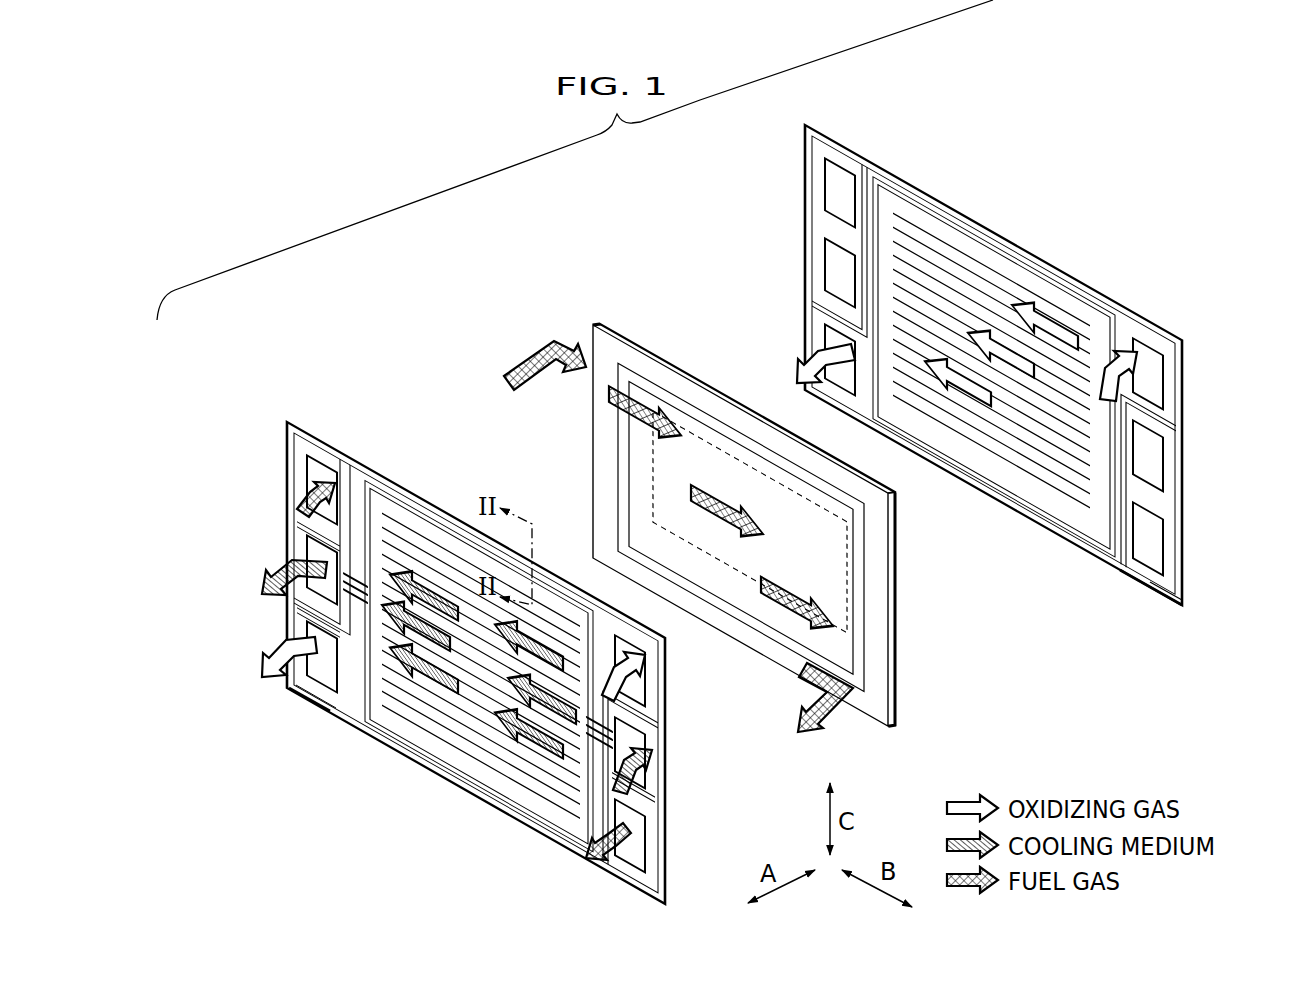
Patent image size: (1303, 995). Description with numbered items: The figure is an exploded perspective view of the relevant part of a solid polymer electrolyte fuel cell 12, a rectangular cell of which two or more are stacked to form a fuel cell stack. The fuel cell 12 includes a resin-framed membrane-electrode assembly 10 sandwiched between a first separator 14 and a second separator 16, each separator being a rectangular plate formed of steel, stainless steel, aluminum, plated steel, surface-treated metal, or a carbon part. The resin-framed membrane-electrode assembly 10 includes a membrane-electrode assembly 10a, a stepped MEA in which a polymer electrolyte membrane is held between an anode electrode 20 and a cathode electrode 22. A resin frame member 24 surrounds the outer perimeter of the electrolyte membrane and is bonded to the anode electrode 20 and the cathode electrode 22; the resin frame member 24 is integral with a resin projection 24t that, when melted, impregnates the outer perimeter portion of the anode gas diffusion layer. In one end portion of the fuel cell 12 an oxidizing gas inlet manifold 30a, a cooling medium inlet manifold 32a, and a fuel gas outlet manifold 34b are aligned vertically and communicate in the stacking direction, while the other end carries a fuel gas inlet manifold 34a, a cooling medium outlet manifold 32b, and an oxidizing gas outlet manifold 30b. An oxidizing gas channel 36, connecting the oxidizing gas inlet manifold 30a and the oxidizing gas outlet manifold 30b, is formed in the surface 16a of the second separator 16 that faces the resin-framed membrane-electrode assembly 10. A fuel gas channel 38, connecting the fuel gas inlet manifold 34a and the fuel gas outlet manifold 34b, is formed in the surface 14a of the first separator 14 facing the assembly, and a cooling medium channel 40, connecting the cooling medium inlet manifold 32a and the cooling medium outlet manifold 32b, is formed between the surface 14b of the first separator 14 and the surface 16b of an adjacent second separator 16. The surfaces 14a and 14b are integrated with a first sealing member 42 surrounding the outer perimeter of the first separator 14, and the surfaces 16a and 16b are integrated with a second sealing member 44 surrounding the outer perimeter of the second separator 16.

The resin-framed membrane-electrode assembly 10 is at (590, 319).
The membrane-electrode assembly 10a is at (717, 578).
The solid polymer electrolyte fuel cell 12 is at (569, 218).
The first separator 14 is at (302, 418).
The surface of the first separator 14a is at (300, 697).
The surface of the first separator 14b is at (325, 692).
The second separator 16 is at (800, 134).
The surface of the second separator 16a is at (1145, 572).
The surface of the second separator 16b is at (1160, 582).
The anode electrode 20 is at (640, 497).
The cathode electrode 22 is at (718, 460).
The resin frame member 24 is at (649, 339).
The resin projection 24t is at (863, 608).
The oxidizing gas inlet manifold 30a is at (635, 689).
The oxidizing gas outlet manifold 30b is at (320, 632).
The cooling medium inlet manifold 32a is at (635, 737).
The cooling medium outlet manifold 32b is at (313, 548).
The fuel gas inlet manifold 34a is at (313, 483).
The fuel gas outlet manifold 34b is at (635, 826).
The oxidizing gas channel 36 is at (958, 268).
The fuel gas channel 38 is at (432, 547).
The cooling medium channel 40 is at (413, 712).
The first sealing member 42 is at (387, 483).
The second sealing member 44 is at (808, 288).